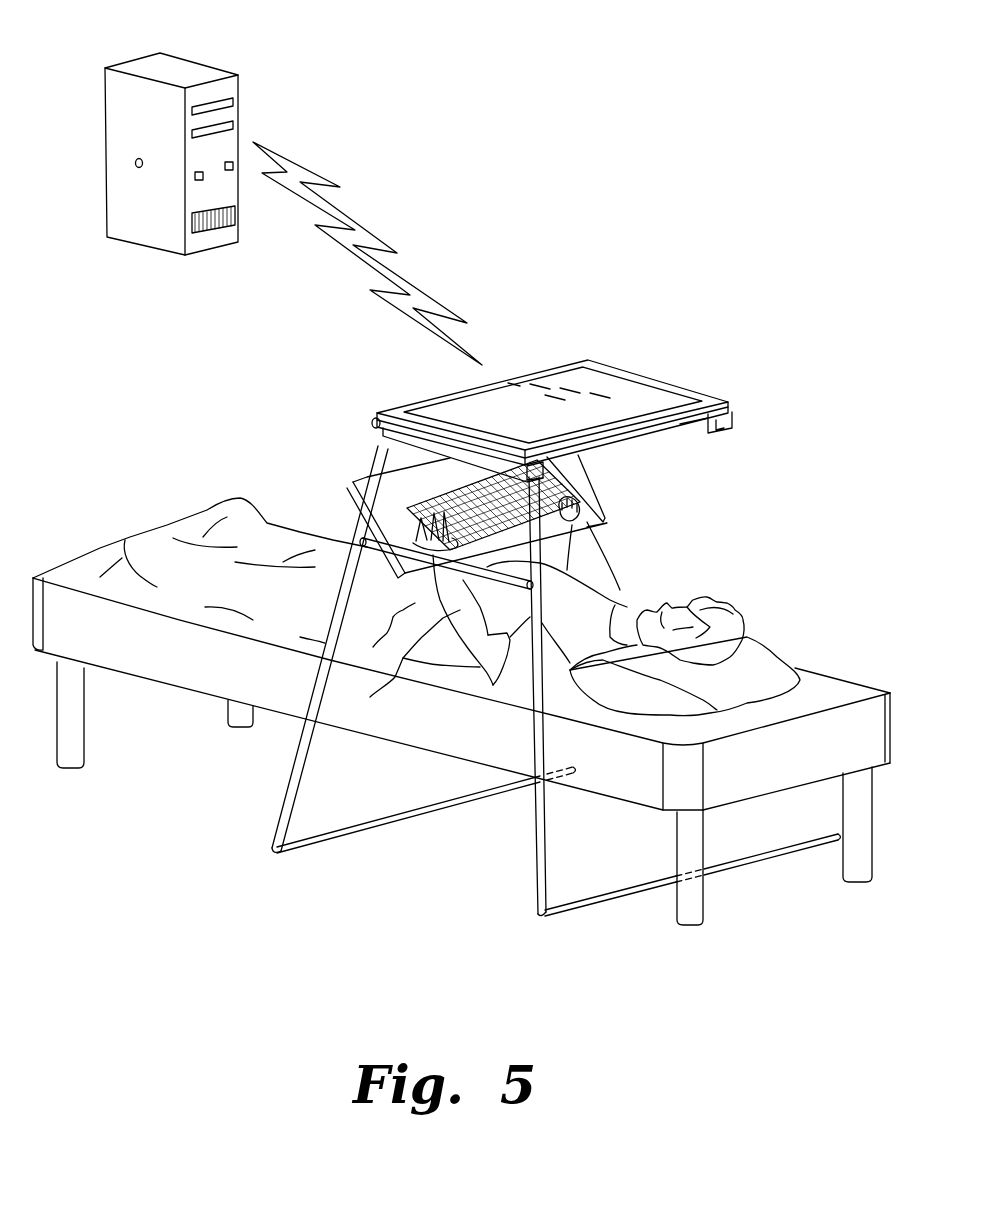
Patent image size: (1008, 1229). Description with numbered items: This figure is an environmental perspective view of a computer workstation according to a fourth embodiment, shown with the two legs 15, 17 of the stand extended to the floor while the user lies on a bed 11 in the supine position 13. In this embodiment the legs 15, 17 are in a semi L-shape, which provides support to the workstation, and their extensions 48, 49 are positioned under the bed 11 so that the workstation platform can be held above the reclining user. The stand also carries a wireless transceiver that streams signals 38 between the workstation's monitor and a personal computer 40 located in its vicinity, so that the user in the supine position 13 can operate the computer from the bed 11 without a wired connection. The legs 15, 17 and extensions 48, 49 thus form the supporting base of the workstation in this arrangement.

The bed 11 is at (177, 670).
The supine position 13 is at (843, 683).
The leg 15 is at (280, 800).
The leg 17 is at (530, 877).
The signals 38 is at (400, 252).
The personal computer 40 is at (238, 73).
The extension 48 is at (362, 823).
The extension 49 is at (610, 892).